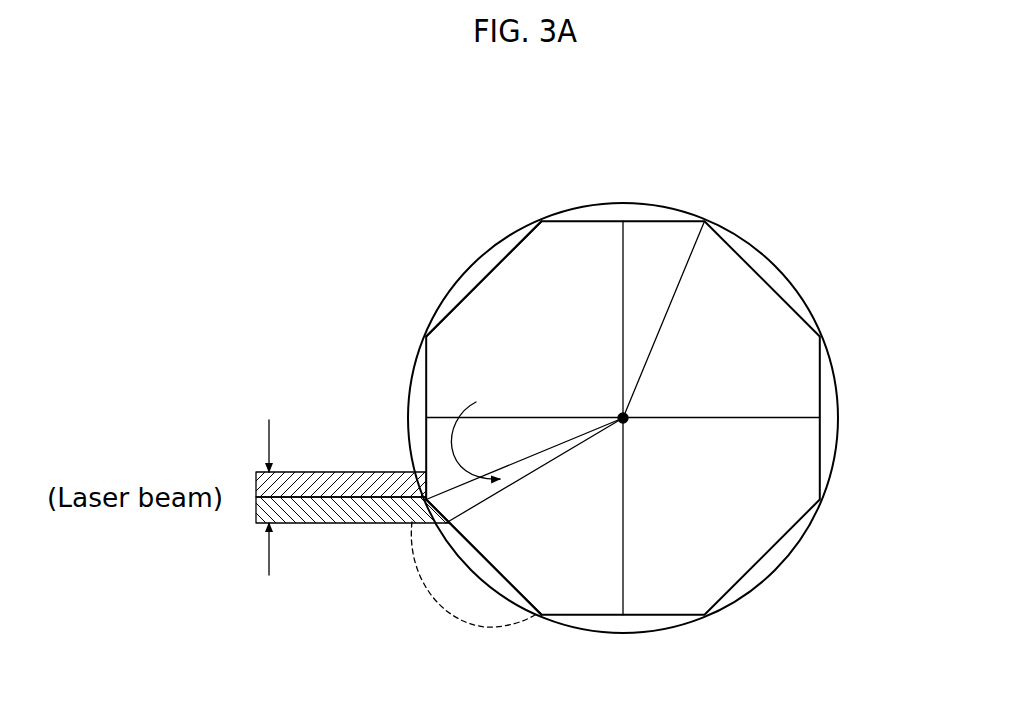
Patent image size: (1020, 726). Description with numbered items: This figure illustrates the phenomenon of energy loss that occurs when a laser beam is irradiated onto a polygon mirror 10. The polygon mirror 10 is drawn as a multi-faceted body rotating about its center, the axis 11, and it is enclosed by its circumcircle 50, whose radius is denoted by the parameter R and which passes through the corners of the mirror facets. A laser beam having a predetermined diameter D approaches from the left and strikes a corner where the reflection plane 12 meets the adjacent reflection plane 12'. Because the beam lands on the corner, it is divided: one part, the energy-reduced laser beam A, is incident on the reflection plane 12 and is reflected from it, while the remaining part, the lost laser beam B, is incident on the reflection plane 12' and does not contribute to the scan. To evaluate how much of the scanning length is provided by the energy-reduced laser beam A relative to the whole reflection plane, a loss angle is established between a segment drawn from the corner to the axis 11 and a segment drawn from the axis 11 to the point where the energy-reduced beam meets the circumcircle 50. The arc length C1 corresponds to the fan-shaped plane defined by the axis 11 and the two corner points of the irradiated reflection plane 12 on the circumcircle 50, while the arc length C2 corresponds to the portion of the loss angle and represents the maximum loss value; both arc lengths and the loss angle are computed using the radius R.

The polygon mirror 10 is at (824, 425).
The axis 11 is at (628, 422).
The reflection plane 12 is at (492, 557).
The reflection plane 12' is at (483, 296).
The circumcircle 50 is at (768, 254).
The radius of the circumcircle R is at (705, 222).
The energy-reduced laser beam A is at (320, 523).
The lost laser beam B is at (333, 472).
The diameter of the laser beam D is at (245, 497).
The arc length C1 is at (470, 625).
The arc length C2 is at (428, 507).